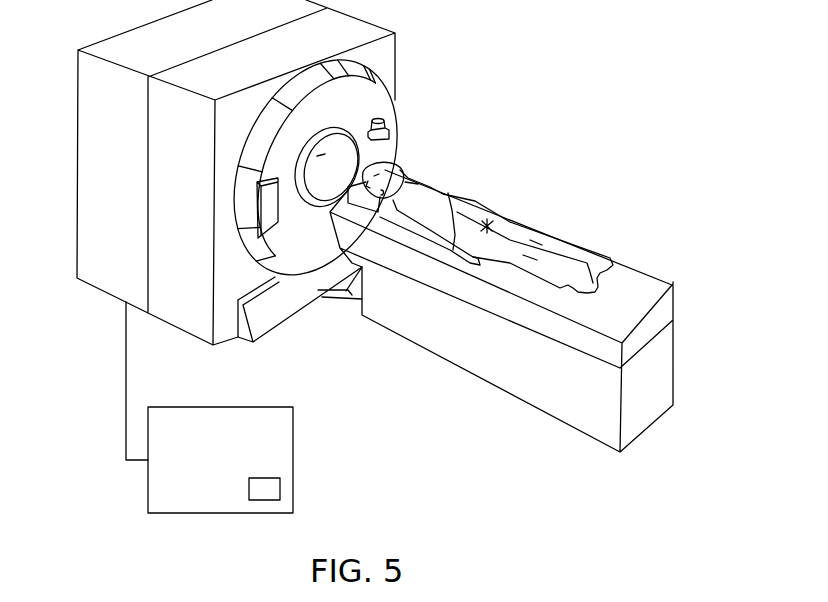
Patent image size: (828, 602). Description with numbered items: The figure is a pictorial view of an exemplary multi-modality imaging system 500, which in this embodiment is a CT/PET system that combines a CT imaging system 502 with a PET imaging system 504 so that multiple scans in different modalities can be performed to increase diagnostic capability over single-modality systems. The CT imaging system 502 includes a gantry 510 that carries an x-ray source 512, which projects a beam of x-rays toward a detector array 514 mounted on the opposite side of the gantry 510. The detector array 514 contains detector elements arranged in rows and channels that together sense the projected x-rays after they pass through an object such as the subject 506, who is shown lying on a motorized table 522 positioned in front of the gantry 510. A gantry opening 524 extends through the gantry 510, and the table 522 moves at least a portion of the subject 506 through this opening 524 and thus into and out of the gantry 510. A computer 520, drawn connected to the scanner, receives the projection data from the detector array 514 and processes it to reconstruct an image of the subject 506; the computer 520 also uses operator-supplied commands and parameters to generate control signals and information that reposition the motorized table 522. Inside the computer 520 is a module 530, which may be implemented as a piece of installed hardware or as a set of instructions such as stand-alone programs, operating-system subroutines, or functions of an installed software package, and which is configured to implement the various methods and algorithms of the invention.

The multi-modality imaging system 500 is at (527, 51).
The CT imaging system 502 is at (187, 313).
The PET imaging system 504 is at (103, 280).
The subject 506 is at (445, 191).
The gantry 510 is at (387, 50).
The x-ray source 512 is at (389, 131).
The detector array 514 is at (268, 221).
The computer 520 is at (293, 440).
The motorized table 522 is at (467, 362).
The gantry opening 524 is at (317, 156).
The module 530 is at (270, 492).